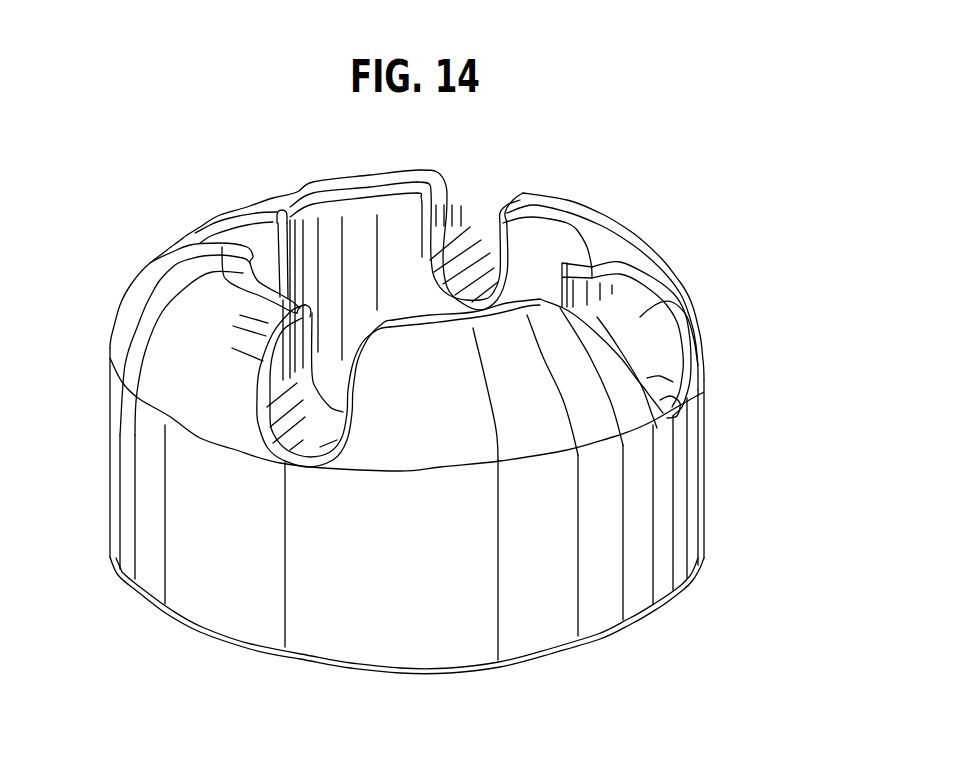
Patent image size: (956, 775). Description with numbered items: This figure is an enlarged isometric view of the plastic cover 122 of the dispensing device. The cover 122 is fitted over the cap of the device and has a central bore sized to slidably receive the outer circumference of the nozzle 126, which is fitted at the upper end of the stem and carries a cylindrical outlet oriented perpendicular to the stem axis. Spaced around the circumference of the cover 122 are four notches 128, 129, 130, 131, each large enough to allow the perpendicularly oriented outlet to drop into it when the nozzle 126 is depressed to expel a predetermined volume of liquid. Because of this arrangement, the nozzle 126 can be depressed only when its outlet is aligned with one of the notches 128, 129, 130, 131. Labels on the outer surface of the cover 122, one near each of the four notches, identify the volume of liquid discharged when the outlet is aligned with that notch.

The cover 122 is at (722, 450).
The nozzle 126 is at (395, 227).
The notch 128 is at (480, 228).
The notch 129 is at (642, 318).
The notch 130 is at (270, 447).
The notch 131 is at (228, 237).